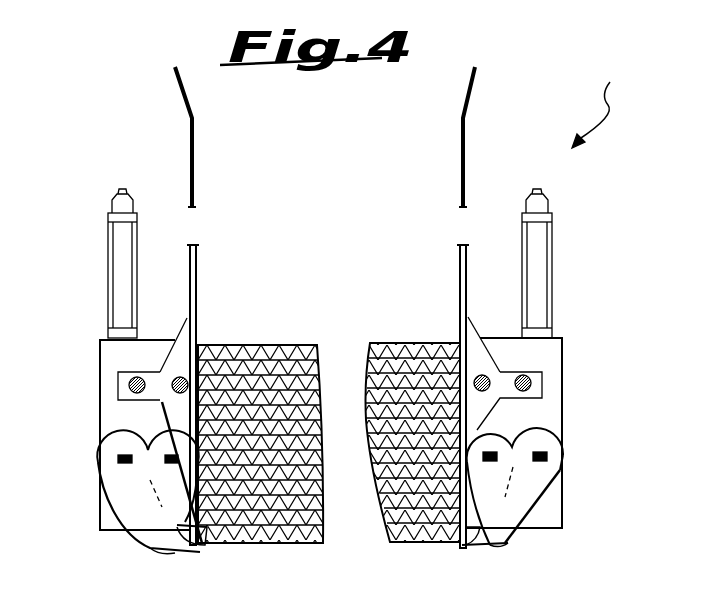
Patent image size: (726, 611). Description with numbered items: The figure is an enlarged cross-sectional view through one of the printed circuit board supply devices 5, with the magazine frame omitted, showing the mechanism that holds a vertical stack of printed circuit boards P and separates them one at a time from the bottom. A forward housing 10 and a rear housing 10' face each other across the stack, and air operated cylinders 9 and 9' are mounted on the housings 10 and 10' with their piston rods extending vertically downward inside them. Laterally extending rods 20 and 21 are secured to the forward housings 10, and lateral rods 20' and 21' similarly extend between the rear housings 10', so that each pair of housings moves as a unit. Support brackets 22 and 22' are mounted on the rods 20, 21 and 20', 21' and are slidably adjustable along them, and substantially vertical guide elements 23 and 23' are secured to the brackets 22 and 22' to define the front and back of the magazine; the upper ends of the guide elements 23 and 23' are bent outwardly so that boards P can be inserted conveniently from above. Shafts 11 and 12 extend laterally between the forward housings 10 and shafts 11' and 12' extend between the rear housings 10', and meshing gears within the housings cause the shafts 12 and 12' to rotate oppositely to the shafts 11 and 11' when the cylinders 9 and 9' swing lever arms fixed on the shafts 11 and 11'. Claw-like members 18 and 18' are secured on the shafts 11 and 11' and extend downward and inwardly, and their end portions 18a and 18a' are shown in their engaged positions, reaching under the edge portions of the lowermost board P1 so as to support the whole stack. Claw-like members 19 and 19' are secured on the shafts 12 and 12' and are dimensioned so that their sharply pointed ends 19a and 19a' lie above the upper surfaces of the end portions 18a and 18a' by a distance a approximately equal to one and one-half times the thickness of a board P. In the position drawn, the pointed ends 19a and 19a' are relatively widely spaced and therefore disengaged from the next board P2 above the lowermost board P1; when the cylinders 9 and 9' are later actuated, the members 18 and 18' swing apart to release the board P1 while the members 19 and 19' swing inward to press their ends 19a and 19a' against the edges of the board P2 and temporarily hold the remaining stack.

The printed circuit board supply device 5 is at (601, 108).
The air operated cylinder 9 is at (102, 263).
The air operated cylinder 9' is at (555, 263).
The forward housing 10 is at (119, 435).
The rear housing 10' is at (546, 439).
The shaft 11 is at (120, 449).
The shaft 11' is at (548, 444).
The shaft 12 is at (111, 492).
The shaft 12' is at (559, 449).
The claw-like member 18 is at (131, 477).
The claw-like member 18' is at (546, 501).
The end portion 18a is at (220, 556).
The end portion 18a' is at (465, 556).
The claw-like member 19 is at (147, 508).
The claw-like member 19' is at (547, 468).
The sharply pointed end 19a is at (178, 555).
The sharply pointed end 19a' is at (504, 564).
The lateral rod 20 is at (118, 387).
The lateral rod 20' is at (544, 379).
The lateral rod 21 is at (102, 401).
The lateral rod 21' is at (545, 383).
The support bracket 22 is at (165, 333).
The support bracket 22' is at (488, 330).
The guide element 23 is at (166, 137).
The guide element 23' is at (487, 137).
The printed circuit board P is at (253, 346).
The lowermost printed circuit board P1 is at (318, 546).
The next printed circuit board P2 is at (391, 544).
The distance a is at (235, 546).